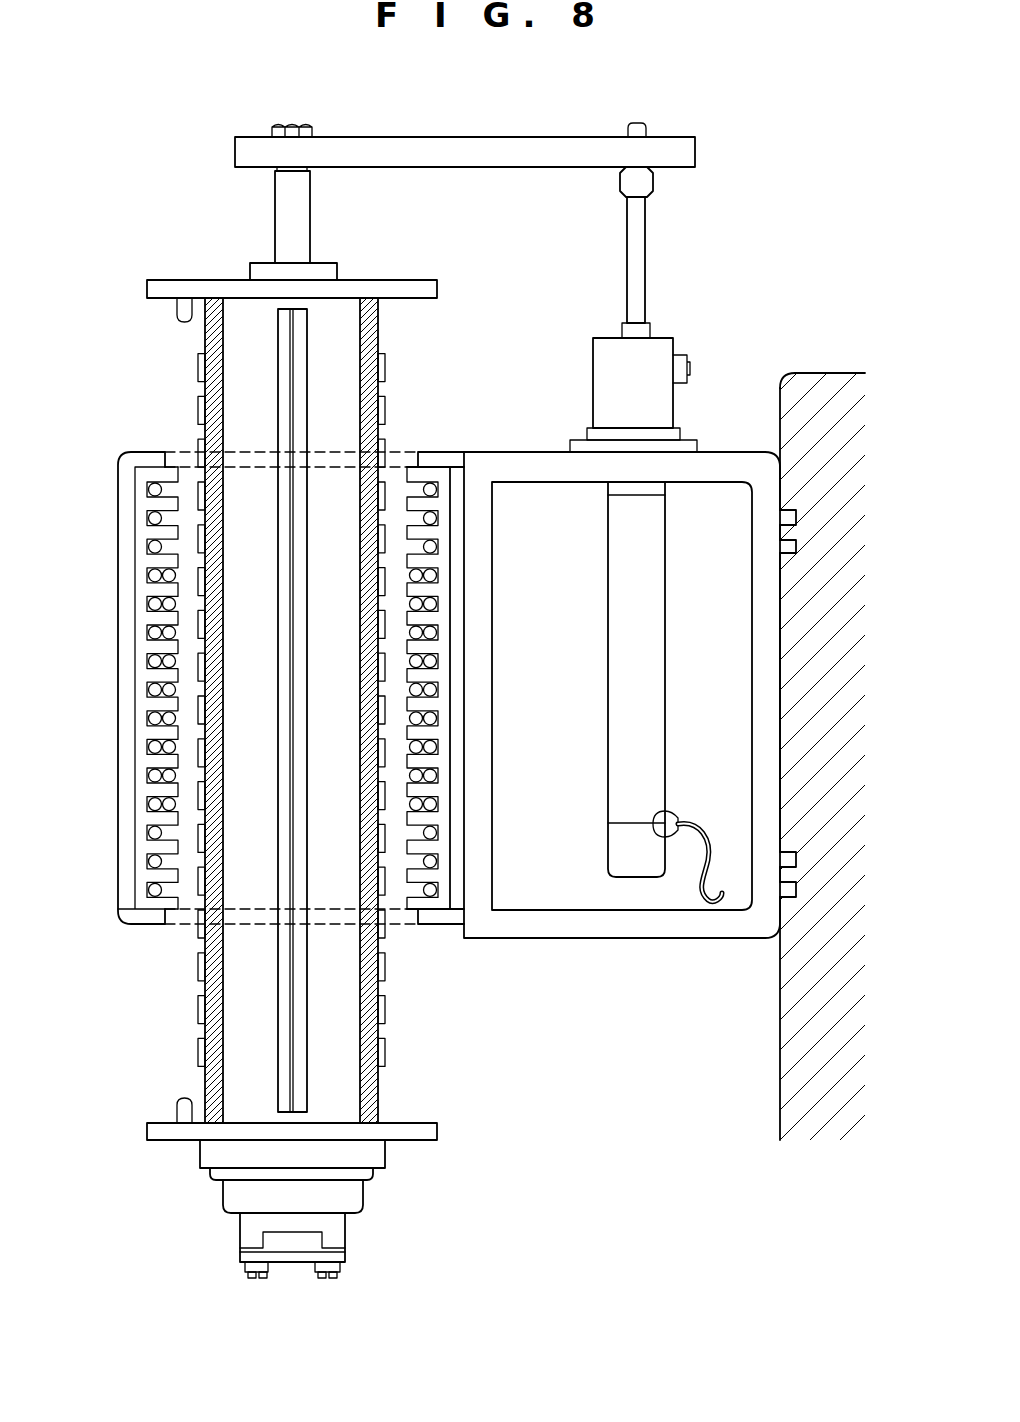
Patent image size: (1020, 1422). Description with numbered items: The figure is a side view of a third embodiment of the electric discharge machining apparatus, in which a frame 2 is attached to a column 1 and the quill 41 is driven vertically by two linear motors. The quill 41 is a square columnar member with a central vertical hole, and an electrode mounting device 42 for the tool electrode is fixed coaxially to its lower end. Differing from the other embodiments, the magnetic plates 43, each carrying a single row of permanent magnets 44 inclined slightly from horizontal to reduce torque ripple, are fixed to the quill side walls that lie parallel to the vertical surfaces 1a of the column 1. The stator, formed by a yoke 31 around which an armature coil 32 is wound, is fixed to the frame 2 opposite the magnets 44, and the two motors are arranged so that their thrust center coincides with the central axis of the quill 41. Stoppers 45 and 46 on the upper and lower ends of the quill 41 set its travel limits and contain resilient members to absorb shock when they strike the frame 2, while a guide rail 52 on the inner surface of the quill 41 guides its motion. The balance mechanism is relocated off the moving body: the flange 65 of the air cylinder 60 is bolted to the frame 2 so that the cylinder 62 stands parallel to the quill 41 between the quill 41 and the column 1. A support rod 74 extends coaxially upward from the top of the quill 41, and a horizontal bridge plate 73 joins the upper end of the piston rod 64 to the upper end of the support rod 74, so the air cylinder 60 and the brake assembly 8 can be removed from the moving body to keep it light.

The column 1 is at (822, 373).
The vertical surfaces 1a is at (780, 985).
The frame 2 is at (120, 695).
The brake assembly 8 is at (665, 337).
The yoke 31 is at (140, 812).
The armature coil 32 is at (150, 887).
The quill 41 is at (235, 332).
The electrode mounting device 42 is at (240, 1262).
The magnetic plate 43 is at (215, 378).
The permanent magnets 44 is at (385, 970).
The stopper 45 is at (178, 310).
The stopper 46 is at (178, 1113).
The guide rail 52 is at (300, 1053).
The air cylinder 60 is at (587, 720).
The cylinder 62 is at (606, 793).
The piston rod 64 is at (640, 263).
The flange 65 is at (574, 440).
The bridge plate 73 is at (432, 143).
The support rod 74 is at (305, 221).